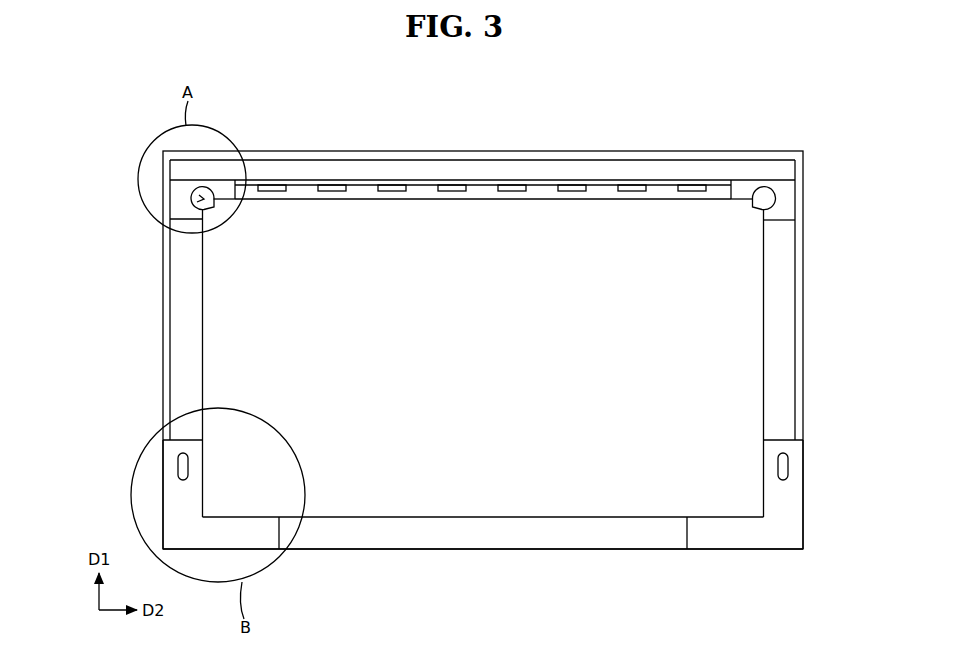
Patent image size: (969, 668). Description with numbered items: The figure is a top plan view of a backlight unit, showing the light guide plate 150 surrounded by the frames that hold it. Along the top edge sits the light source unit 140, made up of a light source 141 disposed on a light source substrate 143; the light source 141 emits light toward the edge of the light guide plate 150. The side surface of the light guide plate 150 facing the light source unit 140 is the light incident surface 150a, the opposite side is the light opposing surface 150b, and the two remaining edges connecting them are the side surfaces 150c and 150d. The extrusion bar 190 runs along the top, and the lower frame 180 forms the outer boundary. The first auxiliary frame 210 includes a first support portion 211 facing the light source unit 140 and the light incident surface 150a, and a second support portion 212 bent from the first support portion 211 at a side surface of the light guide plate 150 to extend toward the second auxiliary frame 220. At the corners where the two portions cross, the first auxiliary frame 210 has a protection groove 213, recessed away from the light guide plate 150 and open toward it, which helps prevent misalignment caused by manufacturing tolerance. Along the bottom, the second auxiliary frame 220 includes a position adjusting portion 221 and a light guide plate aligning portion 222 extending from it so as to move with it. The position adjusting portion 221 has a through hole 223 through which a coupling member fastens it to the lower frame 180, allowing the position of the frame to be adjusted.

The light source unit 140 is at (483, 137).
The light source 141 is at (312, 116).
The light source substrate 143 is at (312, 183).
The light guide plate 150 is at (480, 354).
The light incident surface 150a is at (543, 196).
The light opposing surface 150b is at (483, 520).
The side surface 150c is at (201, 298).
The side surface 150d is at (765, 290).
The lower frame 180 is at (445, 156).
The extrusion bar 190 is at (352, 170).
The first auxiliary frame 210 is at (427, 280).
The first support portion 211 is at (225, 185).
The second support portion 212 is at (185, 212).
The protection groove 213 is at (192, 197).
The second auxiliary frame 220 is at (449, 525).
The position adjusting portion 221 is at (185, 505).
The light guide plate aligning portion 222 is at (255, 535).
The through hole 223 is at (176, 467).